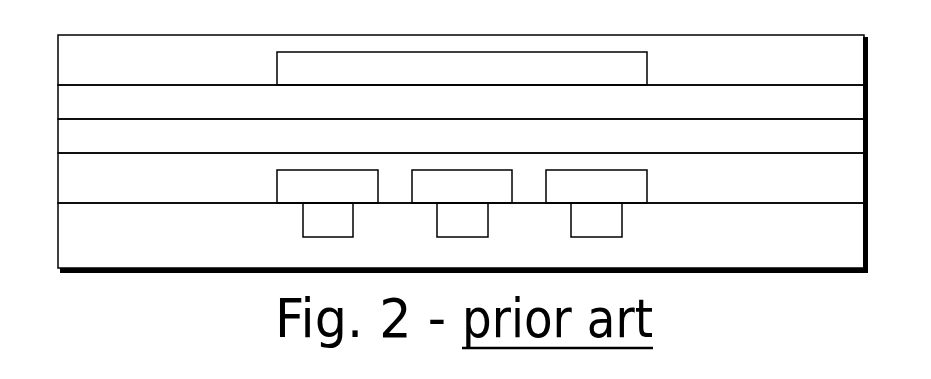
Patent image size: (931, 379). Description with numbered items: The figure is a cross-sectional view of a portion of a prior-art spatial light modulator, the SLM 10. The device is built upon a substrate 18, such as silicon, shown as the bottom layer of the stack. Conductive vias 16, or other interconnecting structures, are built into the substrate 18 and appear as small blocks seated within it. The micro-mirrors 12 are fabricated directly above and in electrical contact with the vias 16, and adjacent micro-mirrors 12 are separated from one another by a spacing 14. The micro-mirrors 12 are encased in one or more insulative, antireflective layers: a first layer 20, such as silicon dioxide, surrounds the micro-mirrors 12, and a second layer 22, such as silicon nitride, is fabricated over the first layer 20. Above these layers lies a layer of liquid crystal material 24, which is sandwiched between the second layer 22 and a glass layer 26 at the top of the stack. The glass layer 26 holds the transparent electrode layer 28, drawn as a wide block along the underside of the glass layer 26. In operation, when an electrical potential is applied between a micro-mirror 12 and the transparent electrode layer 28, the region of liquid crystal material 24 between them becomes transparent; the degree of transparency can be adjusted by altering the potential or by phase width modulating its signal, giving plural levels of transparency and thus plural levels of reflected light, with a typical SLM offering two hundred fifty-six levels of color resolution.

The spatial light modulator 10 is at (197, 292).
The micro-mirrors 12 is at (462, 186).
The spacing 14 is at (383, 196).
The conductive vias 16 is at (462, 220).
The substrate 18 is at (103, 248).
The first layer 20 is at (103, 191).
The second layer 22 is at (103, 148).
The liquid crystal material 24 is at (103, 113).
The glass layer 26 is at (103, 72).
The transparent electrode layer 28 is at (462, 68).